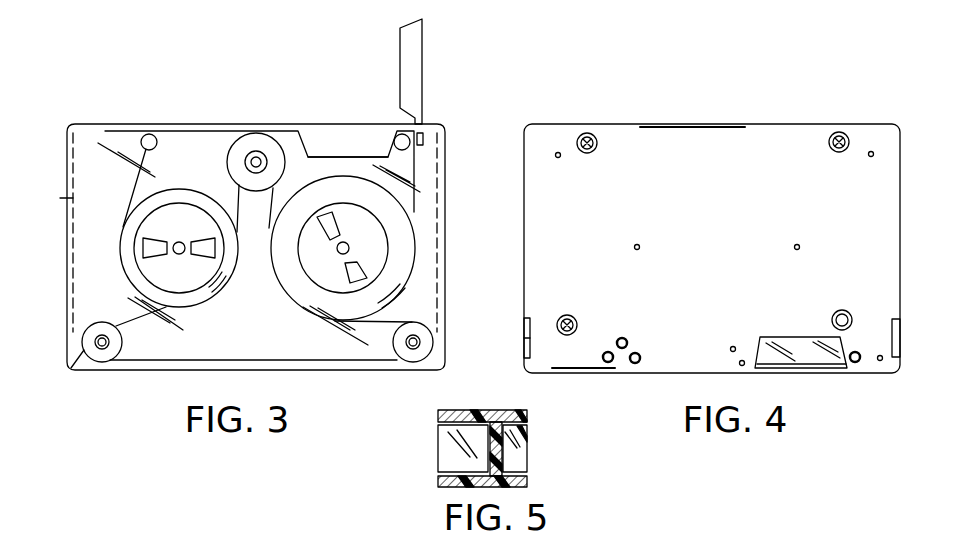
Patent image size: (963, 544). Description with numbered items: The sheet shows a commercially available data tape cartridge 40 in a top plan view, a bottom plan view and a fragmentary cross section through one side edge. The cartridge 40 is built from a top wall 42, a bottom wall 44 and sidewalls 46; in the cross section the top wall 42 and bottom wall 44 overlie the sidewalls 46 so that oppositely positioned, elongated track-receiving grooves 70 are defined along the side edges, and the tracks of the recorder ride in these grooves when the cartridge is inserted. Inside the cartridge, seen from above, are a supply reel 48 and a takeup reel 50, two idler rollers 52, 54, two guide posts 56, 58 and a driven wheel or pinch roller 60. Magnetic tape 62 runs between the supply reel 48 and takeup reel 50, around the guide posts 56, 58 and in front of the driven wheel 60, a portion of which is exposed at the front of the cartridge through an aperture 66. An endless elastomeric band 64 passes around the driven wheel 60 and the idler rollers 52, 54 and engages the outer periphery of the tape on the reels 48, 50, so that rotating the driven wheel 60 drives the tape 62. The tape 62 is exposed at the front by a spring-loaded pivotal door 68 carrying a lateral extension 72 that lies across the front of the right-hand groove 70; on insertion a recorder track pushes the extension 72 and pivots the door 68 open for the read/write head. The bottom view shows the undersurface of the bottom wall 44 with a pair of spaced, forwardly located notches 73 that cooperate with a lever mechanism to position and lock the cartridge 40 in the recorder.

In FIG. 3, the cartridge 40 is at (70, 110).
In FIG. 4, the cartridge 40 is at (900, 112).
In FIG. 3, the top wall 42 is at (123, 227).
In FIG. 5, the top wall 42 is at (503, 412).
In FIG. 4, the bottom wall 44 is at (724, 187).
In FIG. 5, the bottom wall 44 is at (455, 487).
In FIG. 3, the sidewalls 46 is at (62, 198).
In FIG. 5, the sidewalls 46 is at (488, 436).
In FIG. 3, the supply reel 48 is at (372, 235).
In FIG. 3, the takeup reel 50 is at (182, 210).
In FIG. 3, the idler roller 52 is at (95, 353).
In FIG. 3, the idler roller 54 is at (417, 342).
In FIG. 3, the guide post 56 is at (151, 134).
In FIG. 3, the guide post 58 is at (409, 134).
In FIG. 3, the driven wheel 60 is at (270, 147).
In FIG. 3, the magnetic tape 62 is at (360, 130).
In FIG. 3, the endless elastomeric band 64 is at (141, 322).
In FIG. 3, the aperture 66 is at (255, 110).
In FIG. 3, the door 68 is at (416, 53).
In FIG. 5, the door 68 is at (448, 456).
In FIG. 3, the track-receiving grooves 70 is at (424, 136).
In FIG. 5, the track-receiving grooves 70 is at (523, 437).
In FIG. 5, the lateral extension 72 is at (518, 458).
In FIG. 4, the notches 73 is at (527, 338).